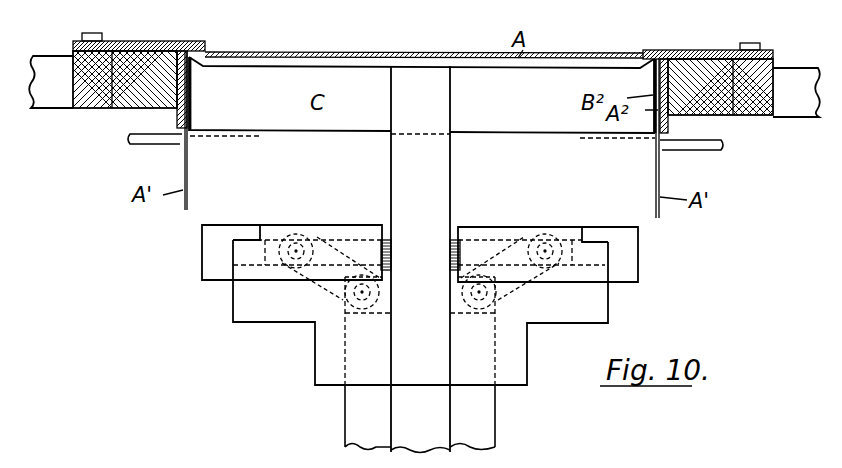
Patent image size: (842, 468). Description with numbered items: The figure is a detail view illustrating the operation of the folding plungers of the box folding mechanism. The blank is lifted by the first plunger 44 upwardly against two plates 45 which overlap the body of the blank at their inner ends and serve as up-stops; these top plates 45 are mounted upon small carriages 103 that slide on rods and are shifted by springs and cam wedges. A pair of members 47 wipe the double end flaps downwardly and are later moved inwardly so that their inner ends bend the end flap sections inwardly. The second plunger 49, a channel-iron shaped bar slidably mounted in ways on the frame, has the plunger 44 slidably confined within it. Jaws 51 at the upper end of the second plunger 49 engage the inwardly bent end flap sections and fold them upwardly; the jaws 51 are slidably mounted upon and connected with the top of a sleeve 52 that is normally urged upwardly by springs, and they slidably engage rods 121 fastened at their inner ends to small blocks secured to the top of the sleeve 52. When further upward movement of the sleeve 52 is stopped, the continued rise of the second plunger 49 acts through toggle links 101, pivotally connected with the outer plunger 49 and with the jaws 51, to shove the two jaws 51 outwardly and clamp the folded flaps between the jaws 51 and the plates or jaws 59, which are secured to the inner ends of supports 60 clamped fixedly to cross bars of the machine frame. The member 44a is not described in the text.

The plates 45 is at (163, 42).
The carriages 103 is at (73, 108).
The members 47 is at (128, 137).
The supports 60 is at (145, 100).
The plates or jaws 59 is at (188, 80).
The plunger 44 is at (420, 259).
The cover plate 44a is at (508, 68).
The toggle links 101 is at (330, 250).
The rods 121 is at (437, 247).
The jaws 51 is at (202, 252).
The sleeve 52 is at (322, 355).
The second plunger 49 is at (493, 427).